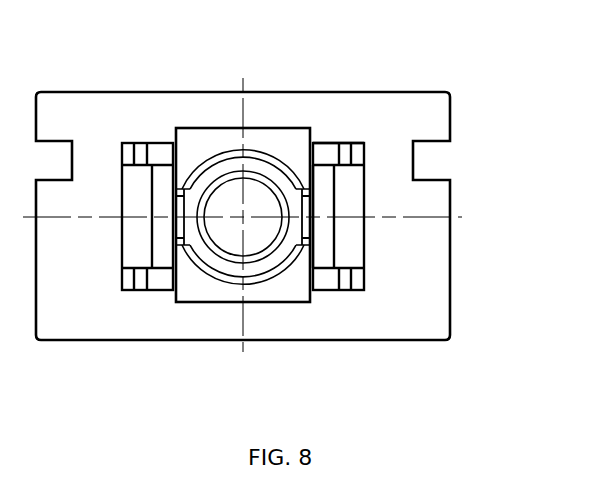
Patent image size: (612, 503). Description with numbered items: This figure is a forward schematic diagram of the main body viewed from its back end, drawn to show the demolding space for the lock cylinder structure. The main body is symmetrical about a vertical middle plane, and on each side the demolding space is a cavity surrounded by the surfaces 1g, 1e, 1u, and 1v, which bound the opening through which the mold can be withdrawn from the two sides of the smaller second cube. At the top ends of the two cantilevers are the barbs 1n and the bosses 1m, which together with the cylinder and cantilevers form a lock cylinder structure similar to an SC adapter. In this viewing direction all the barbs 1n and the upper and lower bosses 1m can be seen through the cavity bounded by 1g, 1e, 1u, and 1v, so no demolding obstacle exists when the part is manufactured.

The barb 1n is at (323, 193).
The demolding cavity boundary surface 1v is at (338, 143).
The boss 1m is at (358, 153).
The demolding cavity boundary surface 1e is at (363, 228).
The demolding cavity boundary surface 1u is at (343, 292).
The demolding cavity boundary surface 1g is at (311, 277).